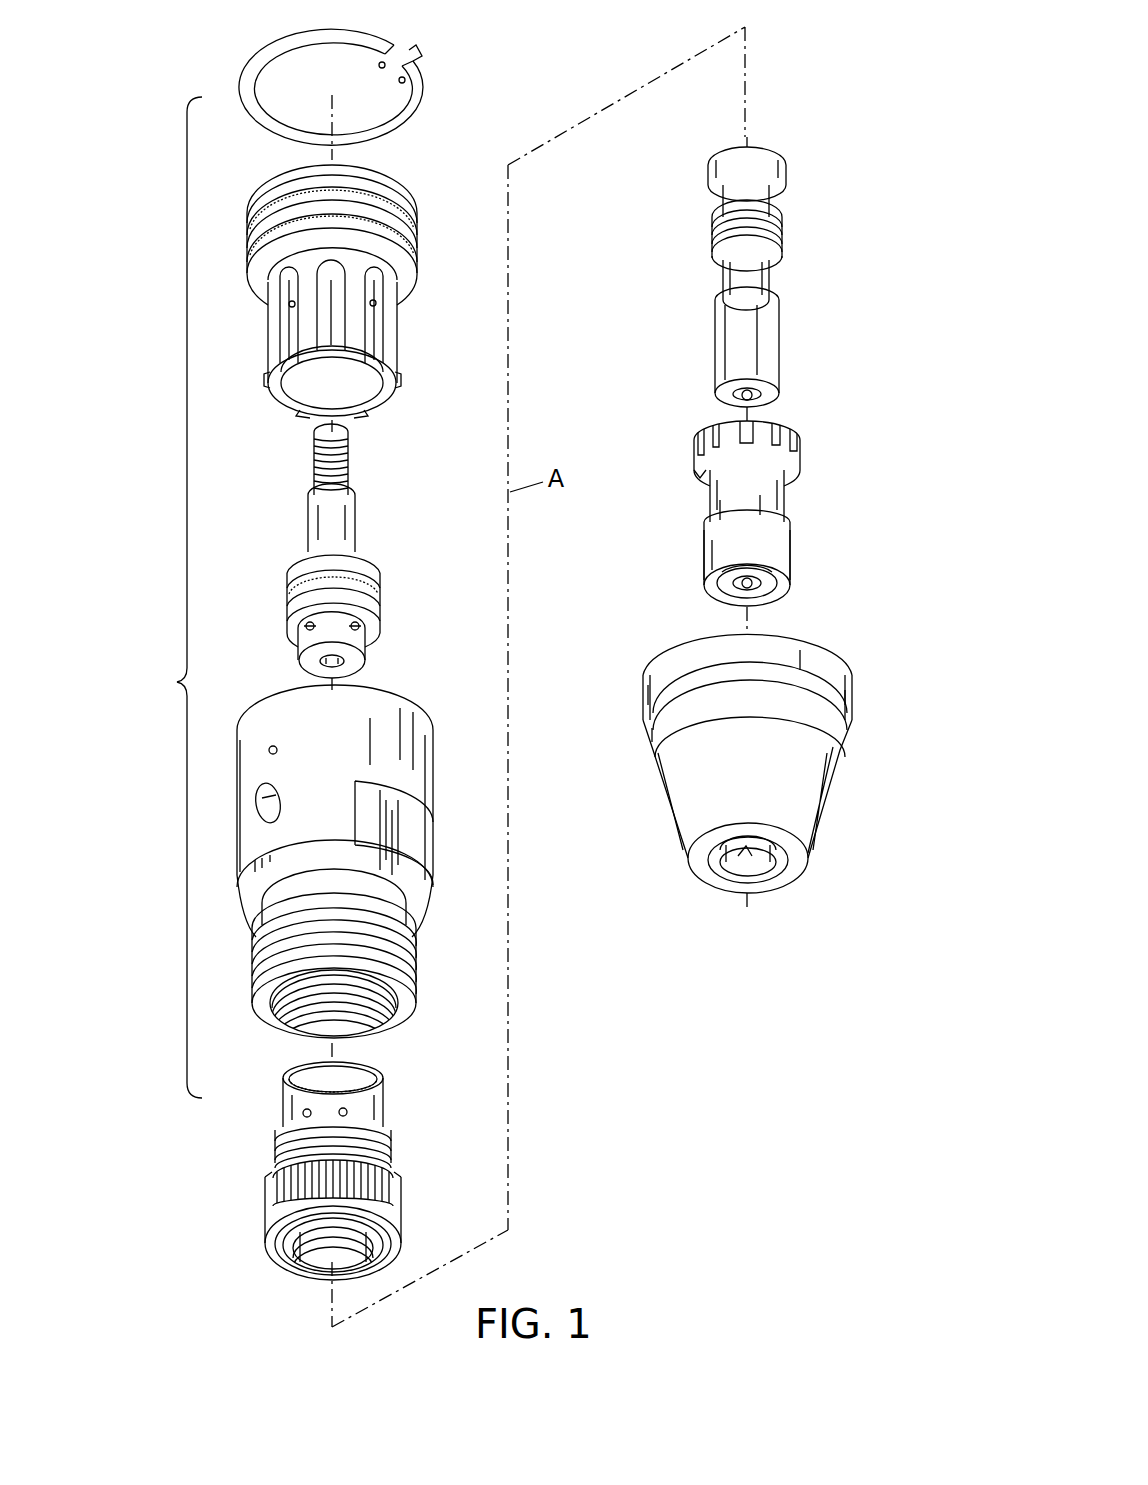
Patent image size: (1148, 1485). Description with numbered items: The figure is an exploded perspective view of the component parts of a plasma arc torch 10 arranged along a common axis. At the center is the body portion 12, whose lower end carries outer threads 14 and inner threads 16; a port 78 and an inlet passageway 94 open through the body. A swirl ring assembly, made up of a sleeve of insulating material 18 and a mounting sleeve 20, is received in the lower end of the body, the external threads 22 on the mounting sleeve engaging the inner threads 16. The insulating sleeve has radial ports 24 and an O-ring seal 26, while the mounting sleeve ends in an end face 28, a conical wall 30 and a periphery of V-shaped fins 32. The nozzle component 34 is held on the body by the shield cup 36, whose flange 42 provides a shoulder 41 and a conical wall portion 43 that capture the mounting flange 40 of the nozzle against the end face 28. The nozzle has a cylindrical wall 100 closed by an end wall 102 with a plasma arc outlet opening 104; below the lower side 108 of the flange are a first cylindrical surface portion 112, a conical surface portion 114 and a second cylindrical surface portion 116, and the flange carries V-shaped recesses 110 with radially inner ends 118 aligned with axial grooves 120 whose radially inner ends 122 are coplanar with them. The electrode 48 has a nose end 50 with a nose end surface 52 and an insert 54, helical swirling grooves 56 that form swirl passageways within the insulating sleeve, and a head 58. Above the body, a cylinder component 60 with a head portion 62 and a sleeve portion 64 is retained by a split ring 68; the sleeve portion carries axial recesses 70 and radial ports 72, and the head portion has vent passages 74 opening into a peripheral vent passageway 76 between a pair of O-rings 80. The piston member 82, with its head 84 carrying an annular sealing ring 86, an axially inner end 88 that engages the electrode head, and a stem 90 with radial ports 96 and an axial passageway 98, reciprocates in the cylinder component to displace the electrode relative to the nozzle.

The plasma arc torch 10 is at (882, 58).
The body portion 12 is at (346, 867).
The outer threads 14 is at (405, 946).
The inner threads 16 is at (370, 1012).
The sleeve of insulating material 18 is at (333, 1183).
The mounting sleeve 20 is at (333, 1244).
The external threads 22 is at (388, 1152).
The ports 24 is at (340, 1112).
The O-ring seal 26 is at (303, 1072).
The end face 28 is at (290, 1263).
The conical wall 30 is at (268, 1240).
The V-shaped fins 32 is at (280, 1192).
The nozzle component 34 is at (750, 511).
The shield cup 36 is at (782, 779).
The mounting flange 40 is at (750, 451).
The shoulder 41 is at (716, 862).
The flange 42 is at (798, 857).
The conical wall portion 43 is at (770, 862).
The electrode 48 is at (768, 281).
The nose end 50 is at (770, 360).
The nose end surface 52 is at (762, 397).
The insert 54 is at (722, 402).
The helical swirling grooves 56 is at (768, 225).
The head 58 is at (775, 163).
The cylinder component 60 is at (350, 219).
The head portion 62 is at (410, 183).
The sleeve portion 64 is at (346, 339).
The split ring 68 is at (415, 93).
The recesses 70 is at (322, 335).
The ports 72 is at (375, 302).
The vent passages 74 is at (288, 197).
The peripheral vent passageway 76 is at (322, 197).
The port 78 is at (270, 748).
The O-rings 80 is at (368, 180).
The piston member 82 is at (346, 562).
The head 84 is at (380, 603).
The annular sealing ring 86 is at (383, 582).
The axially inner end 88 is at (334, 656).
The stem 90 is at (350, 510).
The inlet passageway 94 is at (260, 802).
The ports 96 is at (303, 627).
The axial passageway 98 is at (338, 663).
The cylindrical wall 100 is at (757, 546).
The end wall 102 is at (720, 585).
The plasma arc outlet opening 104 is at (778, 588).
The lower side 108 is at (700, 471).
The V-shaped recesses 110 is at (697, 487).
The first cylindrical surface portion 112 is at (720, 514).
The conical surface portion 114 is at (792, 530).
The second cylindrical surface portion 116 is at (706, 560).
The radially inner end 118 is at (702, 462).
The grooves 120 is at (782, 440).
The radially inner ends 122 is at (752, 437).